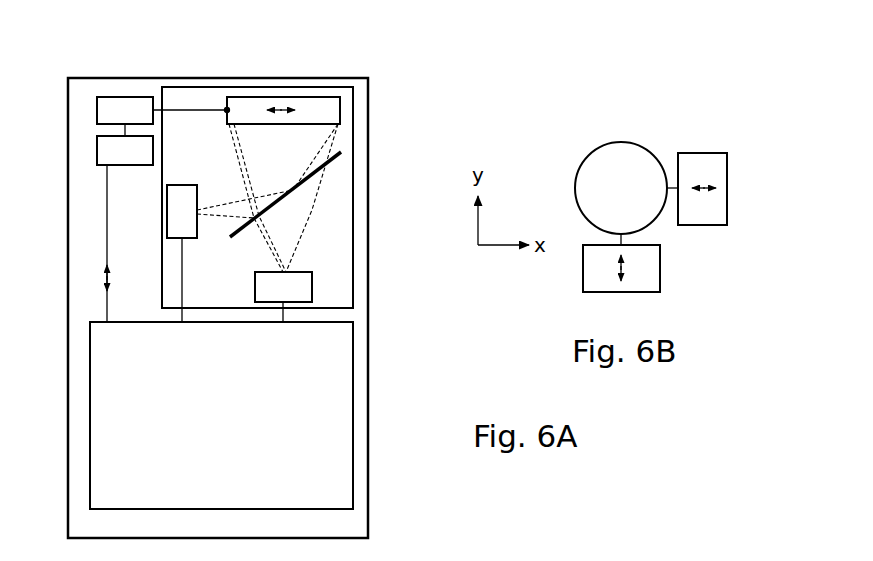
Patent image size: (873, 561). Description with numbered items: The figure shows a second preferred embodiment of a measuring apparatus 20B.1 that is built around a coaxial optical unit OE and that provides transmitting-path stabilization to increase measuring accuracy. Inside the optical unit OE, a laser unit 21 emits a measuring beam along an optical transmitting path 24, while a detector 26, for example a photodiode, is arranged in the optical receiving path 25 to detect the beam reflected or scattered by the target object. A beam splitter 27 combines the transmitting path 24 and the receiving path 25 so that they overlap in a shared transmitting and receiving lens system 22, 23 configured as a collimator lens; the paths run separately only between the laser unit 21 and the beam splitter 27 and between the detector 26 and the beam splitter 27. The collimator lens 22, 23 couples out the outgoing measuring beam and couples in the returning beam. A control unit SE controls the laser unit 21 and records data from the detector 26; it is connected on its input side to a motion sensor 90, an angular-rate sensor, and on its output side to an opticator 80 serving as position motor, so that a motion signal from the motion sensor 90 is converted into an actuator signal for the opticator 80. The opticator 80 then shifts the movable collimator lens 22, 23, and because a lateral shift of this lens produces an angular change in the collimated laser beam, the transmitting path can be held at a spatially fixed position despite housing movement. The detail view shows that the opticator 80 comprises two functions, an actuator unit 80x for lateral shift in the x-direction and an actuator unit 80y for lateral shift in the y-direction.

In FIG. 6A, the measuring apparatus 20B.1 is at (276, 65).
In FIG. 6A, the opticator 80 is at (97, 108).
In FIG. 6A, the motion sensor 90 is at (97, 155).
In FIG. 6A, the transmitting lens system 22 is at (343, 110).
In FIG. 6B, the transmitting lens system 22 is at (609, 151).
In FIG. 6A, the receiving lens system 23 is at (340, 107).
In FIG. 6B, the receiving lens system 23 is at (597, 136).
In FIG. 6A, the transmitting path 24 is at (233, 203).
In FIG. 6A, the receiving path 25 is at (294, 232).
In FIG. 6A, the detector 26 is at (312, 282).
In FIG. 6A, the beam splitter 27 is at (343, 153).
In FIG. 6A, the laser unit 21 is at (196, 240).
In FIG. 6A, the optical unit OE is at (353, 213).
In FIG. 6A, the control unit SE is at (353, 395).
In FIG. 6B, the actuator unit 80x is at (705, 153).
In FIG. 6B, the actuator unit 80y is at (660, 277).